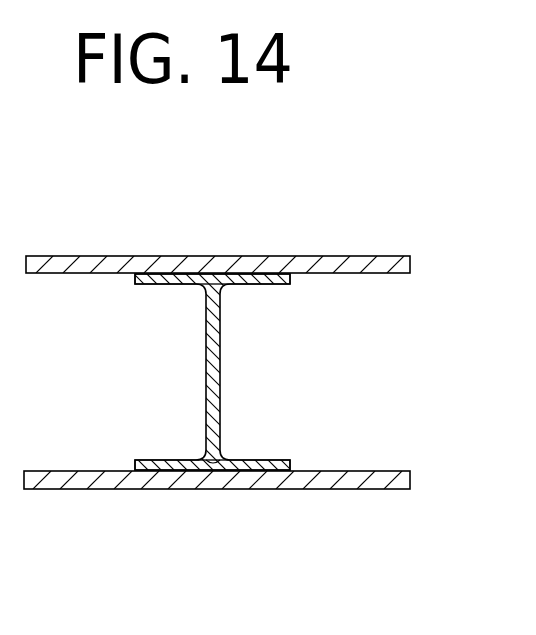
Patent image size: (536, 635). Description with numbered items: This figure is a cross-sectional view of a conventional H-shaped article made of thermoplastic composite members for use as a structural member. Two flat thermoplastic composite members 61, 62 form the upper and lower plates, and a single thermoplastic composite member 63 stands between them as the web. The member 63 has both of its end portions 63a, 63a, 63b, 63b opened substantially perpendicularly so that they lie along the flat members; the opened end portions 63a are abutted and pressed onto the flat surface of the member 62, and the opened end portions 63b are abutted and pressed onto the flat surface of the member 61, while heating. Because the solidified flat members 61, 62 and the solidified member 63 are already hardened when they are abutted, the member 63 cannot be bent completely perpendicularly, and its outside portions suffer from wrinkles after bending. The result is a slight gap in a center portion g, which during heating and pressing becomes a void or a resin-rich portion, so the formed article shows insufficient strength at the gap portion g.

The flat thermoplastic composite member 61 is at (128, 490).
The flat thermoplastic composite member 62 is at (328, 257).
The thermoplastic composite member 63 is at (220, 385).
The opened end portion 63a is at (148, 283).
The opened end portion 63b is at (170, 460).
The gap portion g is at (225, 492).